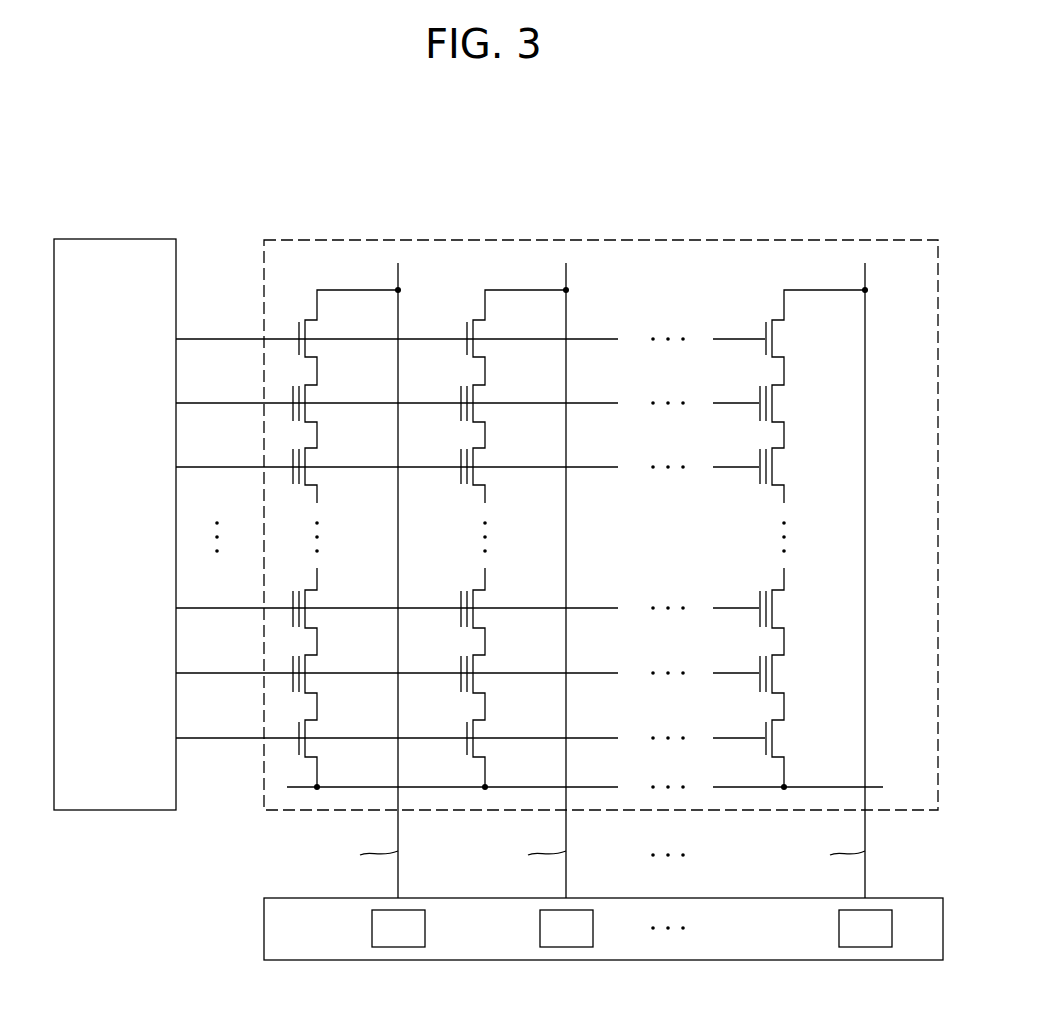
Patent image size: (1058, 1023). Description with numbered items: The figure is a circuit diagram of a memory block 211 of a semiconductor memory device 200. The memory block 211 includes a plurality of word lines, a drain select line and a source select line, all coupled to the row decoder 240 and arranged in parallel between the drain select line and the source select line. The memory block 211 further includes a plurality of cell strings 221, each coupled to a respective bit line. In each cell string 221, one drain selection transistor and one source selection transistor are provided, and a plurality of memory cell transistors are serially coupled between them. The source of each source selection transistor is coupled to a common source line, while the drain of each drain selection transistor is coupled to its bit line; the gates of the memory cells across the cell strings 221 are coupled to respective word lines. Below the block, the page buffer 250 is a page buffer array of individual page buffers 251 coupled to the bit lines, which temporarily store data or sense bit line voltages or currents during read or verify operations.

The memory device 200 is at (913, 142).
The memory block 211 is at (828, 238).
The cell string 221 is at (306, 284).
The row decoder 240 is at (116, 238).
The page buffer 250 is at (567, 929).
The page buffer 251 is at (372, 925).